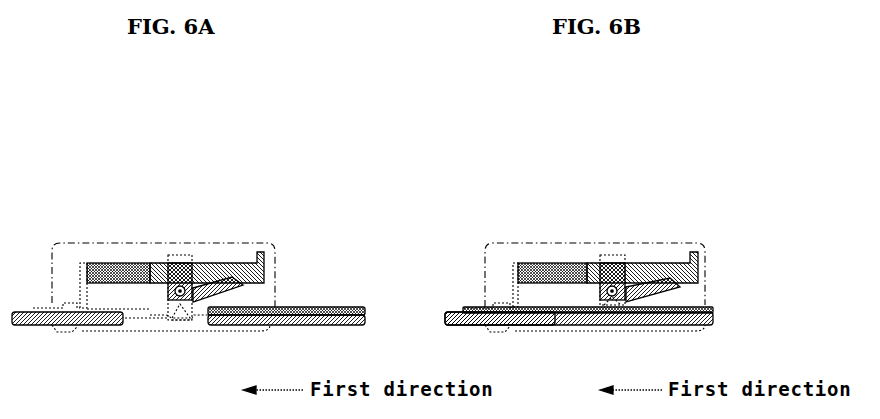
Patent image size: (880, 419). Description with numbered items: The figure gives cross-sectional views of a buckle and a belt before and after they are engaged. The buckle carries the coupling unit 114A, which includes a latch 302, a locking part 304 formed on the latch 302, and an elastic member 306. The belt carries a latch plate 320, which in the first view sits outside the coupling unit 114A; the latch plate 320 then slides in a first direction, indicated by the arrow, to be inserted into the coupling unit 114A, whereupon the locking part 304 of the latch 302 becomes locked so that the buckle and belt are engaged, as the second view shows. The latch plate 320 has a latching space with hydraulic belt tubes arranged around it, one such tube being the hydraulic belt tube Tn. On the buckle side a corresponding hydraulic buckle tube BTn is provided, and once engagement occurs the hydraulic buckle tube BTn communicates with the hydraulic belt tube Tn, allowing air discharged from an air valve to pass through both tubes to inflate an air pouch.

In FIG. 6A, the coupling unit 114A is at (256, 252).
In FIG. 6B, the coupling unit 114A is at (690, 252).
In FIG. 6A, the elastic member 306 is at (117, 263).
In FIG. 6B, the elastic member 306 is at (550, 263).
In FIG. 6A, the latch 302 is at (180, 255).
In FIG. 6B, the latch 302 is at (613, 255).
In FIG. 6A, the locking part 304 is at (181, 321).
In FIG. 6B, the locking part 304 is at (613, 326).
In FIG. 6A, the latch plate 320 is at (312, 307).
In FIG. 6B, the latch plate 320 is at (697, 306).
In FIG. 6A, the hydraulic belt tube Tn is at (313, 326).
In FIG. 6B, the hydraulic belt tube Tn is at (666, 326).
In FIG. 6A, the hydraulic buckle tube BTn is at (37, 326).
In FIG. 6B, the hydraulic buckle tube BTn is at (468, 326).